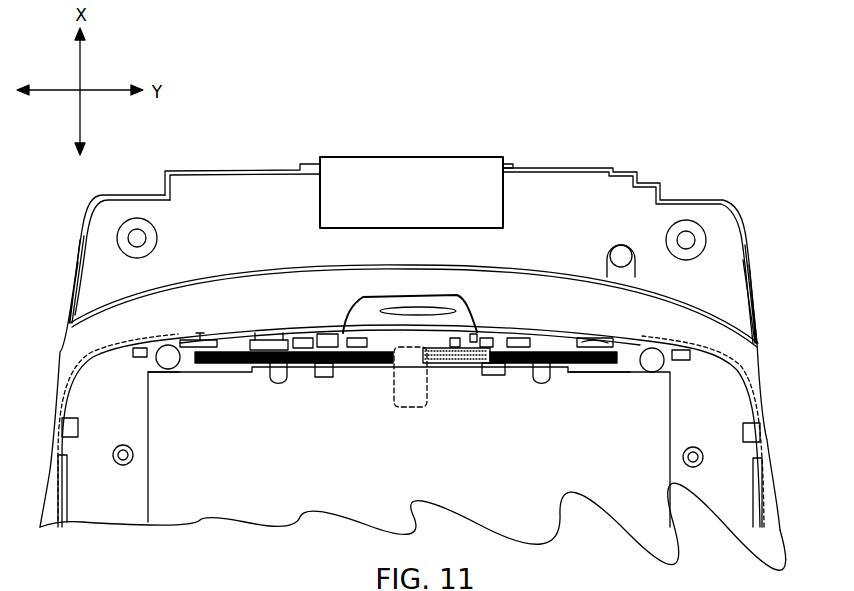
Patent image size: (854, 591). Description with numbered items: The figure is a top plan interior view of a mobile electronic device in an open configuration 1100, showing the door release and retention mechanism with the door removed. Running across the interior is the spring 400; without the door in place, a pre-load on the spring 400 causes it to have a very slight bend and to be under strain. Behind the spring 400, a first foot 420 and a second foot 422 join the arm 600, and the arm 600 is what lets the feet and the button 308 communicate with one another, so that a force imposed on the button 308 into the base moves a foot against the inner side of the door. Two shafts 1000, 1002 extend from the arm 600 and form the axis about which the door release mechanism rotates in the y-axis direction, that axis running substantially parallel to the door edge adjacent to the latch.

The open configuration 1100 is at (660, 97).
The spring 400 is at (271, 336).
The shaft 1000 is at (328, 331).
The button 308 is at (468, 304).
The shaft 1002 is at (526, 330).
The arm 600 is at (358, 330).
The first foot 420 is at (336, 376).
The second foot 422 is at (496, 378).